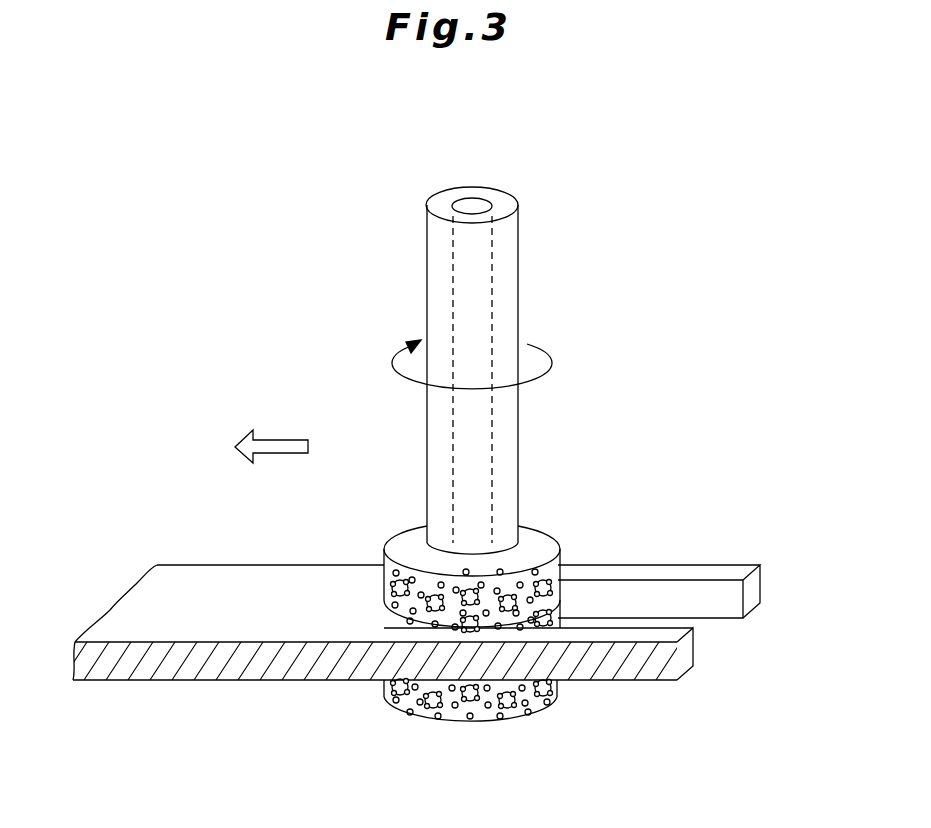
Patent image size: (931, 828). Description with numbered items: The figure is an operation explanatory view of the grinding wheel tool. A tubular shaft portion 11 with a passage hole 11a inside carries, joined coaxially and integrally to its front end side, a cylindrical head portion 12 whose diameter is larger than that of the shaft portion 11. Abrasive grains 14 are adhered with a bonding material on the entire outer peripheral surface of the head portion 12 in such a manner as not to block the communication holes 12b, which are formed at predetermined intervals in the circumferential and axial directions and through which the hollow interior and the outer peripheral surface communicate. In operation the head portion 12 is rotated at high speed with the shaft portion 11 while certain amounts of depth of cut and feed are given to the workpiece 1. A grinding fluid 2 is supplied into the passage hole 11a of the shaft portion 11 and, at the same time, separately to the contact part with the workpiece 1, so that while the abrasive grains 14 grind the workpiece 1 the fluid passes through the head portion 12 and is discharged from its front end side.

The workpiece 1 is at (248, 575).
The grinding fluid 2 is at (473, 204).
The shaft portion 11 is at (518, 283).
The passage hole 11a is at (463, 198).
The head portion 12 is at (533, 537).
The communication holes 12b is at (443, 707).
The abrasive grains 14 is at (560, 567).